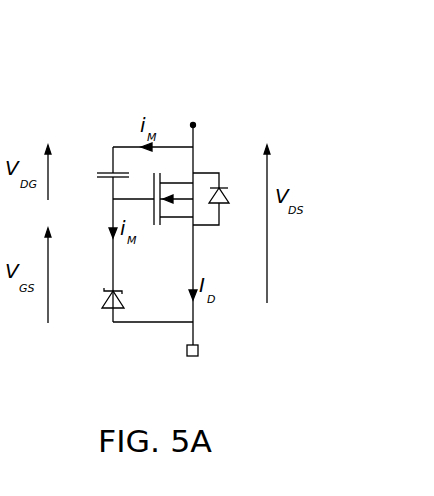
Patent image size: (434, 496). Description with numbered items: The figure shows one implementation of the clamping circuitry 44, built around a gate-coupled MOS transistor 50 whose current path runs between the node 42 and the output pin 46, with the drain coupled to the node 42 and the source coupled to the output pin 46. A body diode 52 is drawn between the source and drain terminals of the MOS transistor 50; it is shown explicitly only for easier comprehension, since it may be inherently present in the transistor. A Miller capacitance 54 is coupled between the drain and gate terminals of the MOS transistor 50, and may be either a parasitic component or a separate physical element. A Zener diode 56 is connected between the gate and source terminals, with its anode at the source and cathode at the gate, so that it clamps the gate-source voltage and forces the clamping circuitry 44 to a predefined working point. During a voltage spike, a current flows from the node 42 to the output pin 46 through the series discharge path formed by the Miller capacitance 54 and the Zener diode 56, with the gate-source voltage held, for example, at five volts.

The node 42 is at (194, 124).
The clamping circuitry 44 is at (118, 99).
The output pin 46 is at (199, 354).
The MOS transistor 50 is at (175, 235).
The body diode 52 is at (231, 217).
The Miller capacitance 54 is at (97, 174).
The Zener diode 56 is at (98, 282).